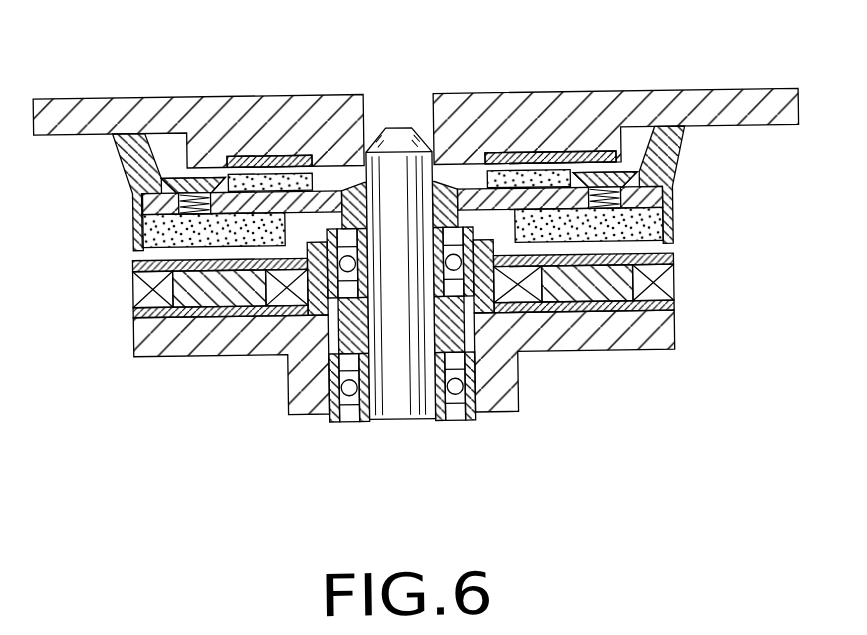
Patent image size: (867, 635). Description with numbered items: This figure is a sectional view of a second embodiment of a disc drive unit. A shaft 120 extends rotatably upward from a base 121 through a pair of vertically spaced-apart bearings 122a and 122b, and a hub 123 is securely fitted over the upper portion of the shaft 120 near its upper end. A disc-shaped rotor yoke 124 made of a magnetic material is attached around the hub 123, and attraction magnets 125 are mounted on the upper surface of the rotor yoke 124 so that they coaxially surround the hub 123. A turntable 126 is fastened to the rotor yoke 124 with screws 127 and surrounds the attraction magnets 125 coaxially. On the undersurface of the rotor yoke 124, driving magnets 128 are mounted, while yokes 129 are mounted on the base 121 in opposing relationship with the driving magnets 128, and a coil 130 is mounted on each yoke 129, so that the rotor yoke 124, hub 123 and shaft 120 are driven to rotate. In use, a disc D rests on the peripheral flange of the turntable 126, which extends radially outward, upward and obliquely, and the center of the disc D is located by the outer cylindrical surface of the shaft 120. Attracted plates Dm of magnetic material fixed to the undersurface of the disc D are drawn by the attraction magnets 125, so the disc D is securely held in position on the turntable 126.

The disc D is at (718, 101).
The attracted plates Dm is at (542, 177).
The shaft 120 is at (417, 405).
The base 121 is at (199, 344).
The bearing 122a is at (356, 420).
The bearing 122b is at (326, 314).
The hub 123 is at (350, 182).
The rotor yoke 124 is at (657, 202).
The attraction magnets 125 is at (505, 158).
The turntable 126 is at (676, 168).
The screws 127 is at (209, 207).
The driving magnets 128 is at (655, 248).
The yokes 129 is at (153, 316).
The coils 130 is at (677, 294).